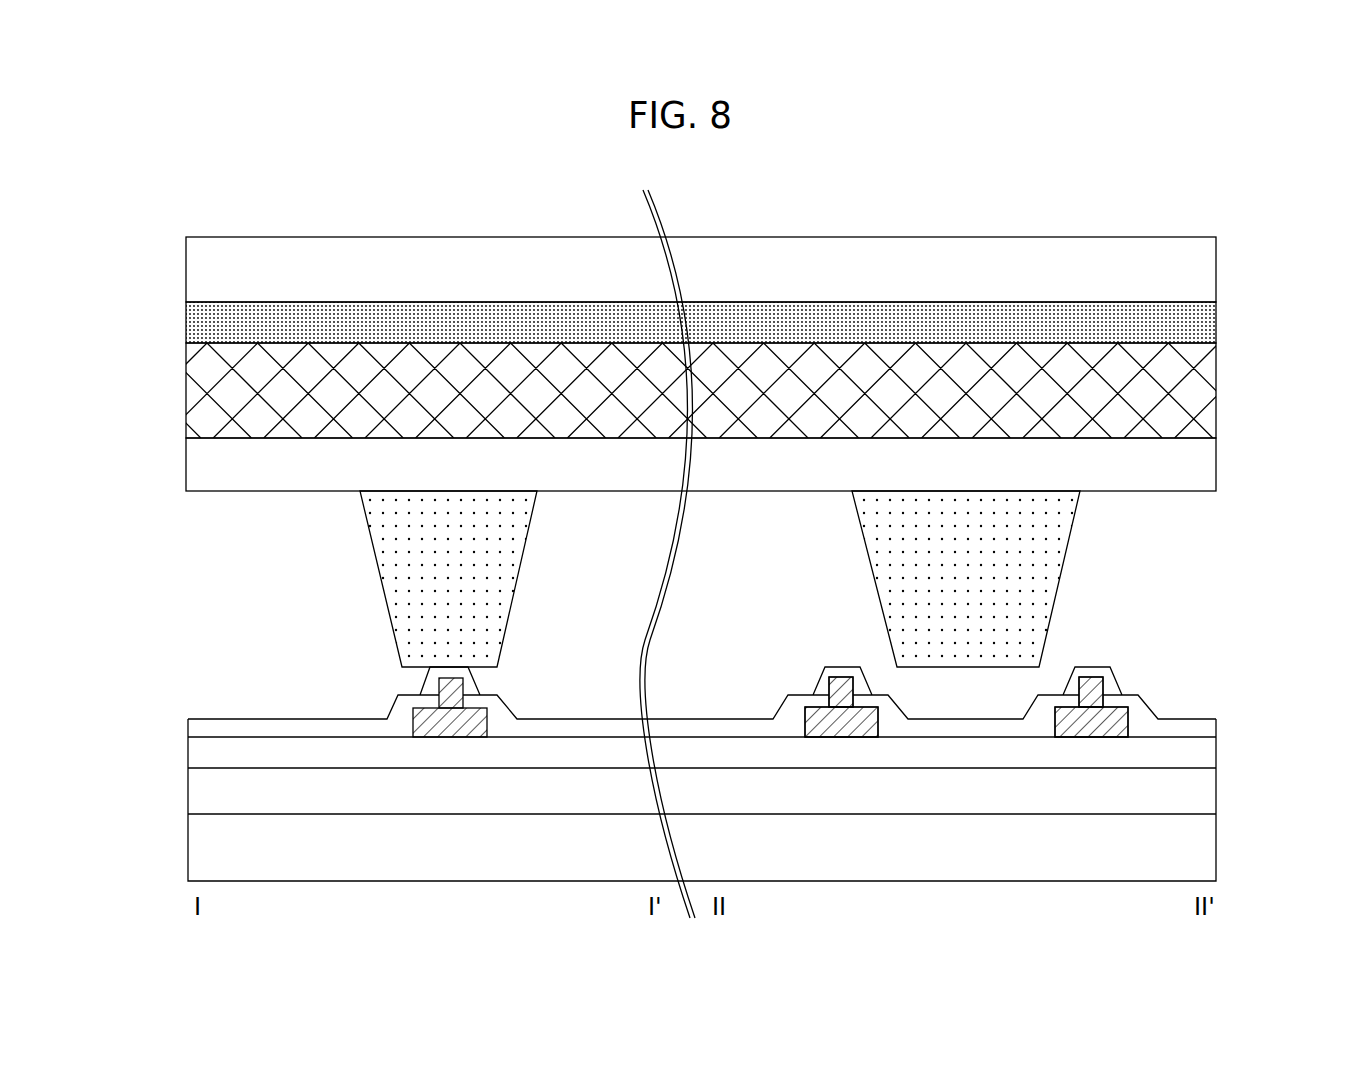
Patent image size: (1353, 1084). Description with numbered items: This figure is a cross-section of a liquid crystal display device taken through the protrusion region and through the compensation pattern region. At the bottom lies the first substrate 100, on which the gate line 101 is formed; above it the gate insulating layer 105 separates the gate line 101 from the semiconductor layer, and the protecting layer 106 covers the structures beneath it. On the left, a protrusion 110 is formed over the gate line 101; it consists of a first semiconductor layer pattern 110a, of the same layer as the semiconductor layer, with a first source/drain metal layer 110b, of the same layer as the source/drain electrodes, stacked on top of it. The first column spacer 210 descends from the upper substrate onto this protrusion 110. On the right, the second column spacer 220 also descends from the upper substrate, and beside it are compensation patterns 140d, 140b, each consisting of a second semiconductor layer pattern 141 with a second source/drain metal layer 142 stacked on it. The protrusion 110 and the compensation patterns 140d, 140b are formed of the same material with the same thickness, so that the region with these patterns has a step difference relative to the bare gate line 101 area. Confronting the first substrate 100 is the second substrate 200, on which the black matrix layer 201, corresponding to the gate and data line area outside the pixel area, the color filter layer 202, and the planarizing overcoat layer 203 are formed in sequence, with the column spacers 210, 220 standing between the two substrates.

The second substrate 200 is at (198, 262).
The black matrix layer 201 is at (198, 325).
The color filter layer 202 is at (198, 399).
The overcoat layer 203 is at (198, 472).
The first column spacer 210 is at (498, 565).
The second column spacer 220 is at (1038, 573).
The protrusion 110 is at (366, 692).
The first semiconductor layer pattern 110a is at (422, 722).
The first source/drain metal layer 110b is at (438, 693).
The compensation pattern 140d is at (721, 697).
The compensation pattern 140b is at (1214, 697).
The second semiconductor layer pattern 141 is at (813, 727).
The second source/drain metal layer 142 is at (838, 692).
The protecting layer 106 is at (200, 730).
The gate insulating layer 105 is at (200, 762).
The gate line 101 is at (200, 798).
The first substrate 100 is at (200, 856).